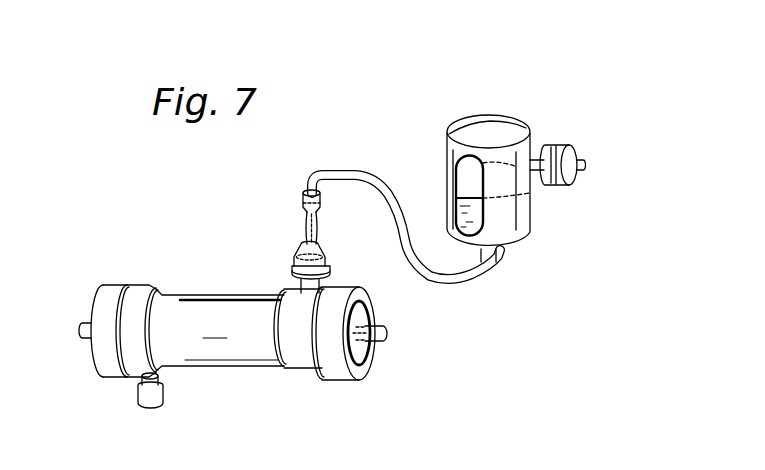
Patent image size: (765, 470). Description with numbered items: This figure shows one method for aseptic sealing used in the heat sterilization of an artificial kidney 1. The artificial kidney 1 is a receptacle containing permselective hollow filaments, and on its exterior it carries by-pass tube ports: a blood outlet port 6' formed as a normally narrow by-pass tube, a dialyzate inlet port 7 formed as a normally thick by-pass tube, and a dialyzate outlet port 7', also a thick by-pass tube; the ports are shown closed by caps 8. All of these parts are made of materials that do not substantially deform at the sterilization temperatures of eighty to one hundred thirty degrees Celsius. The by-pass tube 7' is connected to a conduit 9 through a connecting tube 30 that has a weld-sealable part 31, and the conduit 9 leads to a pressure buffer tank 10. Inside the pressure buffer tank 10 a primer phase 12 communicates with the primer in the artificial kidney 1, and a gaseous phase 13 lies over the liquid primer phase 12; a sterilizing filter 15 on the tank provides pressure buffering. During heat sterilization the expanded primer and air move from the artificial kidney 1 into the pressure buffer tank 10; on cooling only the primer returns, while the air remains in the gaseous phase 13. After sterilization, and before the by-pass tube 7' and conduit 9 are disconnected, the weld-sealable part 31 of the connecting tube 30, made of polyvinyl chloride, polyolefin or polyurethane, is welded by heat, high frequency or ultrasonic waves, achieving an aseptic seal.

The artificial kidney 1 is at (152, 284).
The blood outlet port 6' is at (383, 333).
The dialyzate inlet port 7 is at (175, 393).
The dialyzate outlet port 7' is at (290, 267).
The protective cap 8 is at (84, 323).
The conduit 9 is at (344, 171).
The pressure buffer tank 10 is at (530, 223).
The primer phase 12 is at (451, 206).
The gaseous phase 13 is at (448, 148).
The sterilizing filter 15 is at (557, 147).
The connecting tube 30 is at (300, 206).
The weld-sealable part 31 is at (304, 238).